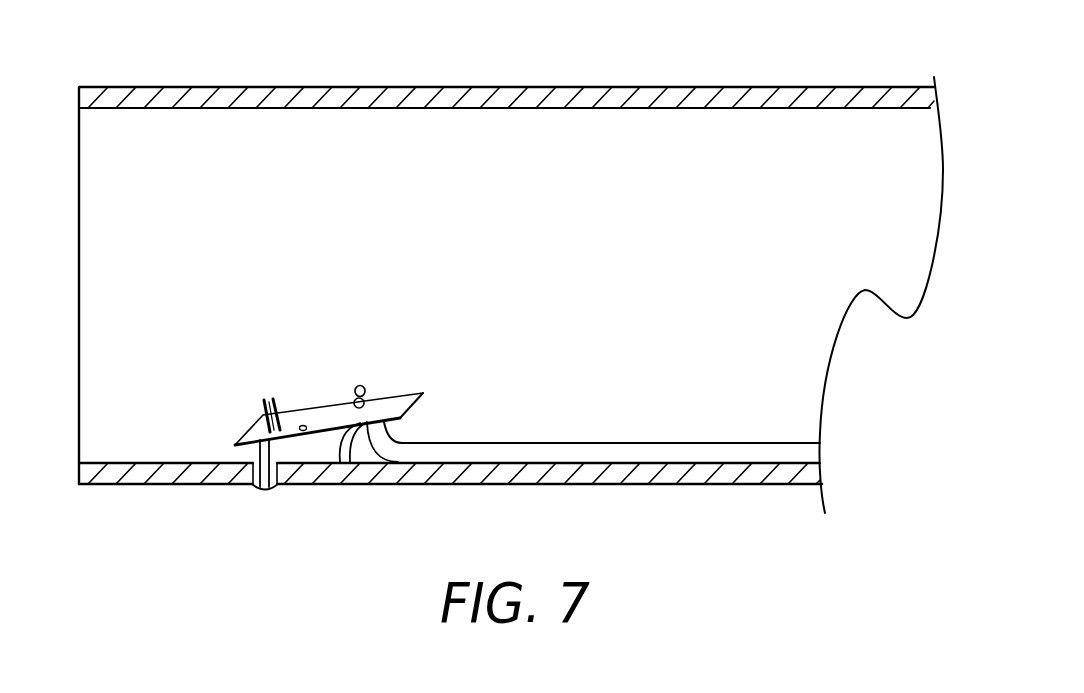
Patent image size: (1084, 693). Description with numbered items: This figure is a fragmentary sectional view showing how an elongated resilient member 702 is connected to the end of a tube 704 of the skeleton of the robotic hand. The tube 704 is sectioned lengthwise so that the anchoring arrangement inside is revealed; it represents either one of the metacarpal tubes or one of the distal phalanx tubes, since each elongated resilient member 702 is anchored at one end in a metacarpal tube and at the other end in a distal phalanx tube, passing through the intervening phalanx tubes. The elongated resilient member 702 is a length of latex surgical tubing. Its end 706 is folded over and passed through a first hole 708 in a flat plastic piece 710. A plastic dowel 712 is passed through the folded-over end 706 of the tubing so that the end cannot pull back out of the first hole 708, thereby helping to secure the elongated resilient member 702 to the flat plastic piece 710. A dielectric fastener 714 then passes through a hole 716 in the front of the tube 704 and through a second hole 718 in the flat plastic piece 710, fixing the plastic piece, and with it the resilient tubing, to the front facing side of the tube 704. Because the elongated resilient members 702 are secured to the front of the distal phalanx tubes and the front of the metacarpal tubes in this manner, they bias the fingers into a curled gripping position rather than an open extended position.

The elongated resilient member 702 is at (654, 452).
The tube 704 is at (640, 90).
The end of the elongated resilient member 706 is at (358, 386).
The first hole 708 is at (354, 397).
The flat plastic piece 710 is at (410, 392).
The plastic dowel 712 is at (368, 398).
The dielectric fastener 714 is at (262, 492).
The hole in the front of the tube 716 is at (253, 463).
The second hole 718 is at (263, 412).